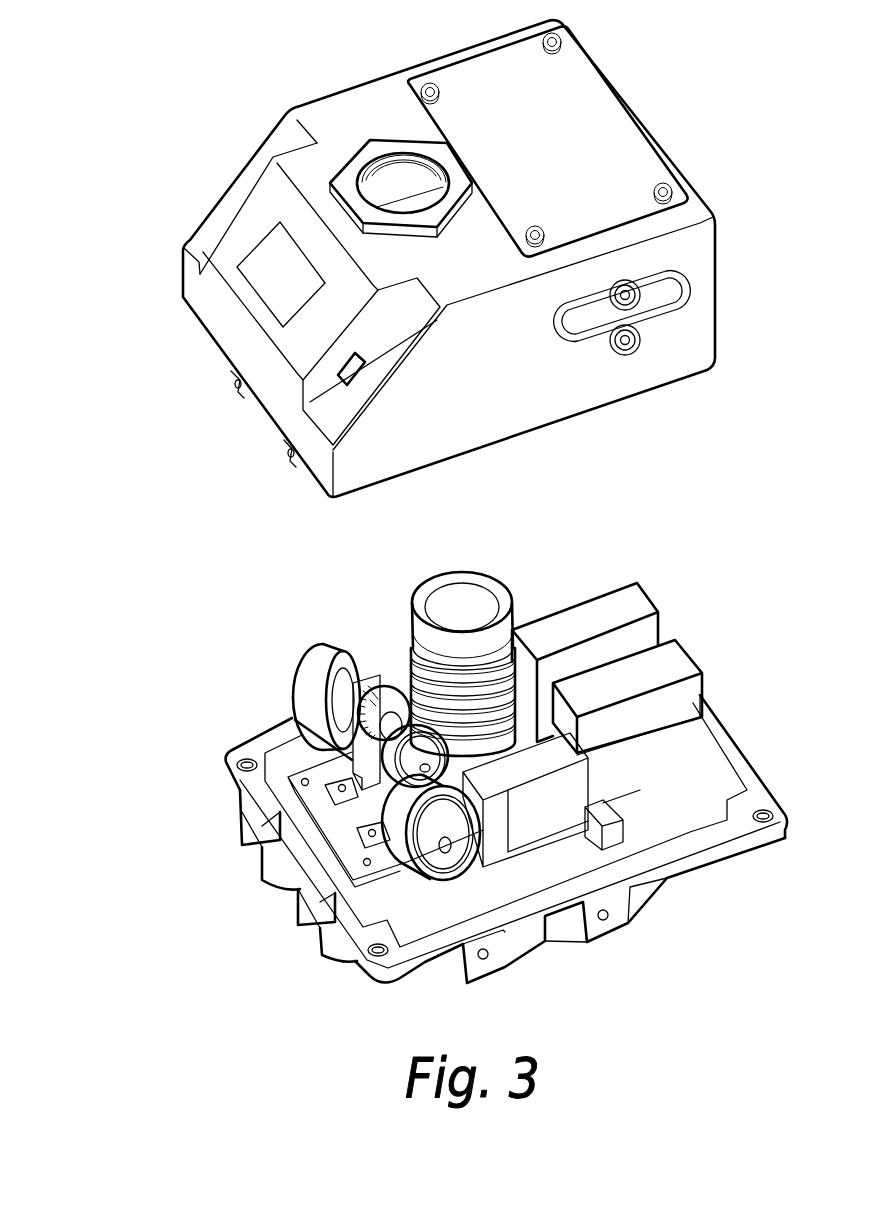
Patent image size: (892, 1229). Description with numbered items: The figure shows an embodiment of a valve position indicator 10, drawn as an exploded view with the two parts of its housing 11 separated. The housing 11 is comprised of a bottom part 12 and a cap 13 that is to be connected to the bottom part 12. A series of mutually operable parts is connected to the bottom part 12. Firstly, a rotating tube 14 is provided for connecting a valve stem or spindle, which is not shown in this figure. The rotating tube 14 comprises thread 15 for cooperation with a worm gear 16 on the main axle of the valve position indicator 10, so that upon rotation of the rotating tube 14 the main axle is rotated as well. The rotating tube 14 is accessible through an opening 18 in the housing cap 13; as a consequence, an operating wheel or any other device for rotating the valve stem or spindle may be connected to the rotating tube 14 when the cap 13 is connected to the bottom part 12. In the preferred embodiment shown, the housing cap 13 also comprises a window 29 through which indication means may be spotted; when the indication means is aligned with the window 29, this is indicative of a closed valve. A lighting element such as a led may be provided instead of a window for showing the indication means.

The valve position indicator 10 is at (140, 98).
The housing 11 is at (176, 250).
The bottom part 12 is at (705, 817).
The cap 13 is at (683, 217).
The rotating tube 14 is at (460, 602).
The thread 15 is at (490, 721).
The worm gear 16 is at (364, 684).
The opening 18 is at (400, 190).
The window 29 is at (322, 343).